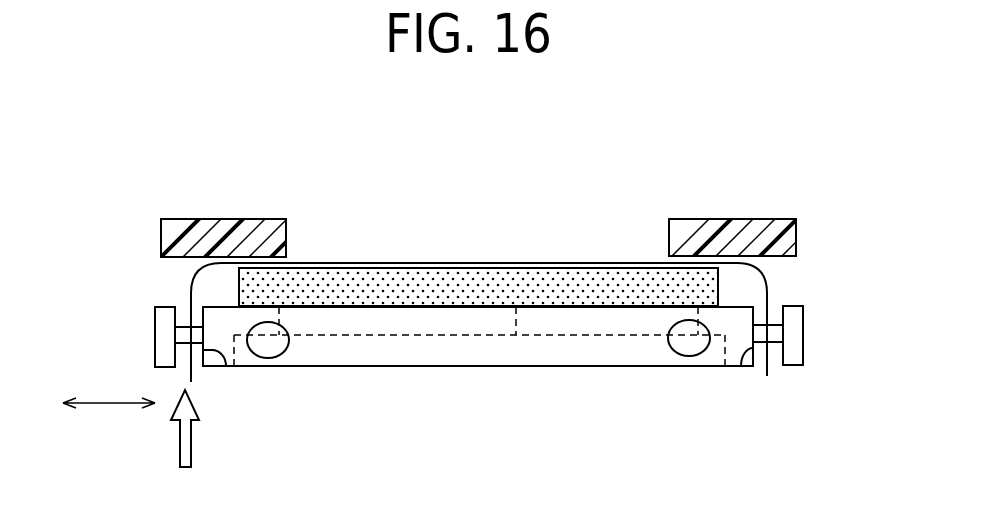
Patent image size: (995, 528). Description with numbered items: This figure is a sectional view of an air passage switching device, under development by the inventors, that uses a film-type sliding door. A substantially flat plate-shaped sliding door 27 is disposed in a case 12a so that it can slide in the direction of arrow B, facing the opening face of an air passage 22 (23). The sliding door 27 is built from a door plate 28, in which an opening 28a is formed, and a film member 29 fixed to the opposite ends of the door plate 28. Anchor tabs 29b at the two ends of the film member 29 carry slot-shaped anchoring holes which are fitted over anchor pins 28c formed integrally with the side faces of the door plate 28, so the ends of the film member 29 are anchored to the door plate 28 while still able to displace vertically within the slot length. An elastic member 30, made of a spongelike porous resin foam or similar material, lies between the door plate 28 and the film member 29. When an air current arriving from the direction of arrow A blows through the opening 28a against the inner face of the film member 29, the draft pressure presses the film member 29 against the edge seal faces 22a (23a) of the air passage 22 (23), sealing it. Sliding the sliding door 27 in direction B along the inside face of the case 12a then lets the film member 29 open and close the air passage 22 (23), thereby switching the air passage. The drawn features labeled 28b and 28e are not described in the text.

The case 12a is at (762, 230).
The air passage 22 is at (479, 270).
The air passage 23 is at (525, 256).
The edge seal face 22a is at (272, 214).
The edge seal face 23a is at (287, 257).
The sliding door 27 is at (545, 368).
The door plate 28 is at (403, 366).
The opening 28a is at (352, 335).
The slider roller 28b is at (270, 360).
The anchor pin 28c is at (172, 340).
The slider projection 28e is at (226, 366).
The film member 29 is at (478, 247).
The anchor tab 29b is at (190, 356).
The elastic member 30 is at (607, 270).
The arrow A direction A is at (192, 458).
The arrow B direction B is at (103, 405).